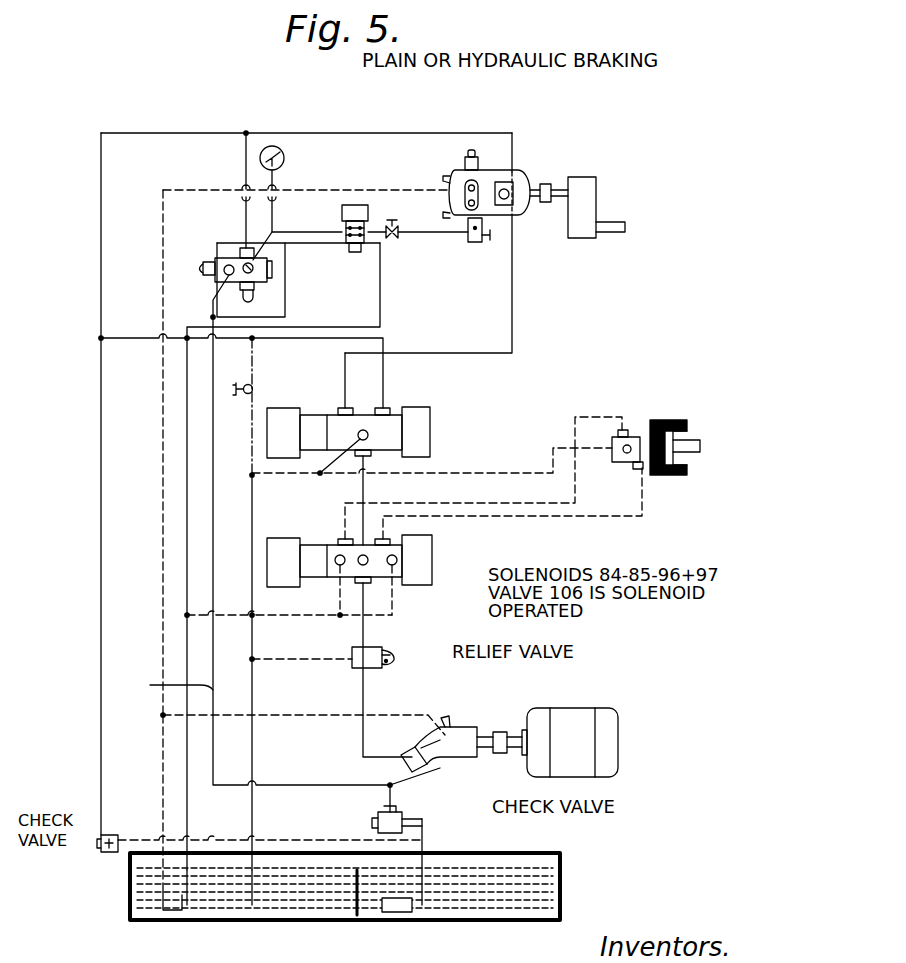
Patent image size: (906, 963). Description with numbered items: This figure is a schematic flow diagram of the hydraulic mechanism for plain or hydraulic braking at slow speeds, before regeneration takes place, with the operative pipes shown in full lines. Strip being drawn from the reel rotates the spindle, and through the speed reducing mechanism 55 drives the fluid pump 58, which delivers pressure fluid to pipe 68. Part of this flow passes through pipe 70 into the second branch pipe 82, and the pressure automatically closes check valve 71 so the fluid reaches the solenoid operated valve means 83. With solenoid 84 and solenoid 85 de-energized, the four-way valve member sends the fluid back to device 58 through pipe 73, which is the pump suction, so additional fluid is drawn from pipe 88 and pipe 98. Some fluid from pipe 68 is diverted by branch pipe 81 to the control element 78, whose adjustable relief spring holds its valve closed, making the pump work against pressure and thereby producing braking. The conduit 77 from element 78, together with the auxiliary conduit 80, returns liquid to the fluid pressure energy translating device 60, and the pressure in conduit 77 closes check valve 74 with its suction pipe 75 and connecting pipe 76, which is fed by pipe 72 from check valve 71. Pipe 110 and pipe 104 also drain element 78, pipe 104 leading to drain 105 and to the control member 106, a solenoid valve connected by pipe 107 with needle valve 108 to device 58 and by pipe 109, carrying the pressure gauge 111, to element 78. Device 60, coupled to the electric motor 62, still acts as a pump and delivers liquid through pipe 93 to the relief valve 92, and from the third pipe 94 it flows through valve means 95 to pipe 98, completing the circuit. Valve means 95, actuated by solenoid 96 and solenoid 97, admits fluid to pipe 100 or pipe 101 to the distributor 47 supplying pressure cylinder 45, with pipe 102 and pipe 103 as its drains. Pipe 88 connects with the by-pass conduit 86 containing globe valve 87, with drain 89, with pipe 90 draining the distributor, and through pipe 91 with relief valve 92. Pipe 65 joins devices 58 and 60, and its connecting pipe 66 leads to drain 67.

The pressure gauge 111 is at (276, 146).
The pipe 68 is at (393, 131).
The fluid pump 58 is at (492, 183).
The speed reducing mechanism 55 is at (597, 197).
The branch pipe 81 is at (244, 156).
The pipe 70 is at (101, 206).
The control member 106 is at (355, 205).
The pipe 109 is at (306, 232).
The control element 78 is at (220, 262).
The pipe 110 is at (318, 243).
The needle valve 108 is at (393, 238).
The pipe 107 is at (470, 242).
The auxiliary conduit 80 is at (285, 292).
The pipe 104 is at (380, 291).
The pipe 73 is at (513, 331).
The second branch pipe 82 is at (316, 340).
The solenoid 84 is at (285, 408).
The solenoid operated valve means 83 is at (327, 414).
The solenoid 85 is at (418, 408).
The manually actuated globe valve 87 is at (246, 396).
The by-pass conduit 86 is at (252, 446).
The pipe 65 is at (163, 478).
The pipe 88 is at (252, 514).
The pipe 98 is at (364, 490).
The pipe 100 is at (600, 417).
The distributor 47 is at (640, 438).
The pipe 90 is at (497, 473).
The pressure cylinder 45 is at (676, 476).
The solenoid 96 is at (285, 538).
The valve means 95 is at (327, 544).
The solenoid 97 is at (430, 557).
The pipe 101 is at (612, 516).
The pipe 103 is at (340, 600).
The pipe 102 is at (392, 601).
The third pipe 94 is at (392, 616).
The relief valve 92 is at (386, 652).
The pipe 91 is at (308, 660).
The pipe 93 is at (370, 692).
The conduit 77 is at (150, 685).
The fluid pressure energy translating device 60 is at (457, 727).
The electric motor 62 is at (566, 708).
The connecting pipe 66 is at (163, 782).
The pipe 72 is at (318, 840).
The connecting pipe 76 is at (380, 813).
The check valve 74 is at (404, 822).
The suction pipe 75 is at (424, 860).
The check valve 71 is at (105, 853).
The drain 67 is at (165, 886).
The drain 105 is at (202, 906).
The drain 89 is at (252, 886).